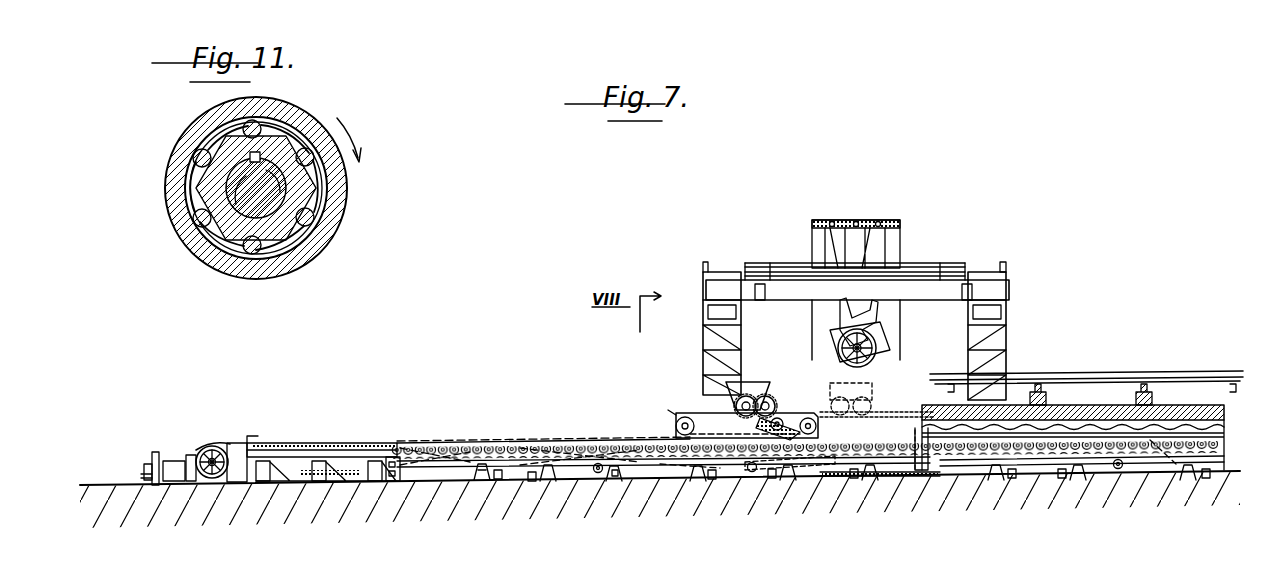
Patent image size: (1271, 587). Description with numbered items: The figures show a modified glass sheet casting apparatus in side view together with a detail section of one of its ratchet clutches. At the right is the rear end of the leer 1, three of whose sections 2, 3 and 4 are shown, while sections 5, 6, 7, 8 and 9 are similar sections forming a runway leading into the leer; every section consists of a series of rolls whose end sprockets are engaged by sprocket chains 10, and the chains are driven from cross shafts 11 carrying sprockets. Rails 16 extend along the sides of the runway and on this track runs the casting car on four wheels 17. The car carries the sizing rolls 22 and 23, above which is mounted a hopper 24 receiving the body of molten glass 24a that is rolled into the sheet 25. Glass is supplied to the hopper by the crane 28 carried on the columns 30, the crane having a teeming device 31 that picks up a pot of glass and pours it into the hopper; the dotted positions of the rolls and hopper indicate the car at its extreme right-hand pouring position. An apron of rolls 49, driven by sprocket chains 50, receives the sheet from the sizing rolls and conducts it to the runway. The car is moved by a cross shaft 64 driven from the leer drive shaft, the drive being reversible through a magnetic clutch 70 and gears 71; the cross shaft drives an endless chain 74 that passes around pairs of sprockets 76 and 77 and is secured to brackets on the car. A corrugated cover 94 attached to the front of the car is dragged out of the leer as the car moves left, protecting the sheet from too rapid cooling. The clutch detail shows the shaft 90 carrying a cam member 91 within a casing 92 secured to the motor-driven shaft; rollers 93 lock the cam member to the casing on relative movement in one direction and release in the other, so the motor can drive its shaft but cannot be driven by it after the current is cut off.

In FIG. 7, the rear end of the leer 1 is at (1097, 420).
In FIG. 7, the leer section 2 is at (1200, 464).
In FIG. 7, the leer section 3 is at (1094, 462).
In FIG. 7, the leer section 4 is at (996, 467).
In FIG. 7, the runway section 5 is at (880, 468).
In FIG. 7, the runway section 6 is at (790, 468).
In FIG. 7, the runway section 7 is at (700, 468).
In FIG. 7, the runway section 8 is at (580, 459).
In FIG. 7, the runway section 9 is at (466, 459).
In FIG. 7, the sprocket chain 10 is at (530, 466).
In FIG. 7, the cross shaft 11 is at (600, 473).
In FIG. 7, the rail 16 is at (370, 443).
In FIG. 7, the wheel 17 is at (676, 422).
In FIG. 7, the sizing roll 22 is at (727, 398).
In FIG. 7, the sizing roll 23 is at (772, 418).
In FIG. 7, the hopper 24 is at (766, 396).
In FIG. 7, the body of molten glass 24a is at (748, 398).
In FIG. 7, the sheet 25 is at (882, 410).
In FIG. 7, the crane 28 is at (770, 296).
In FIG. 7, the column 30 is at (708, 337).
In FIG. 7, the teeming device 31 is at (872, 332).
In FIG. 7, the roll 49 is at (770, 470).
In FIG. 7, the sprocket chain 50 is at (747, 427).
In FIG. 7, the cross shaft 64 is at (214, 478).
In FIG. 7, the magnetic clutch 70 is at (147, 472).
In FIG. 7, the gears 71 is at (148, 462).
In FIG. 7, the endless chain 74 is at (242, 443).
In FIG. 7, the sprockets 76 is at (214, 446).
In FIG. 7, the sprockets 77 is at (917, 472).
In FIG. 11, the shaft 90 is at (226, 178).
In FIG. 11, the cam member 91 is at (200, 190).
In FIG. 11, the casing 92 is at (205, 133).
In FIG. 11, the rollers 93 is at (222, 232).
In FIG. 7, the cover 94 is at (1182, 420).